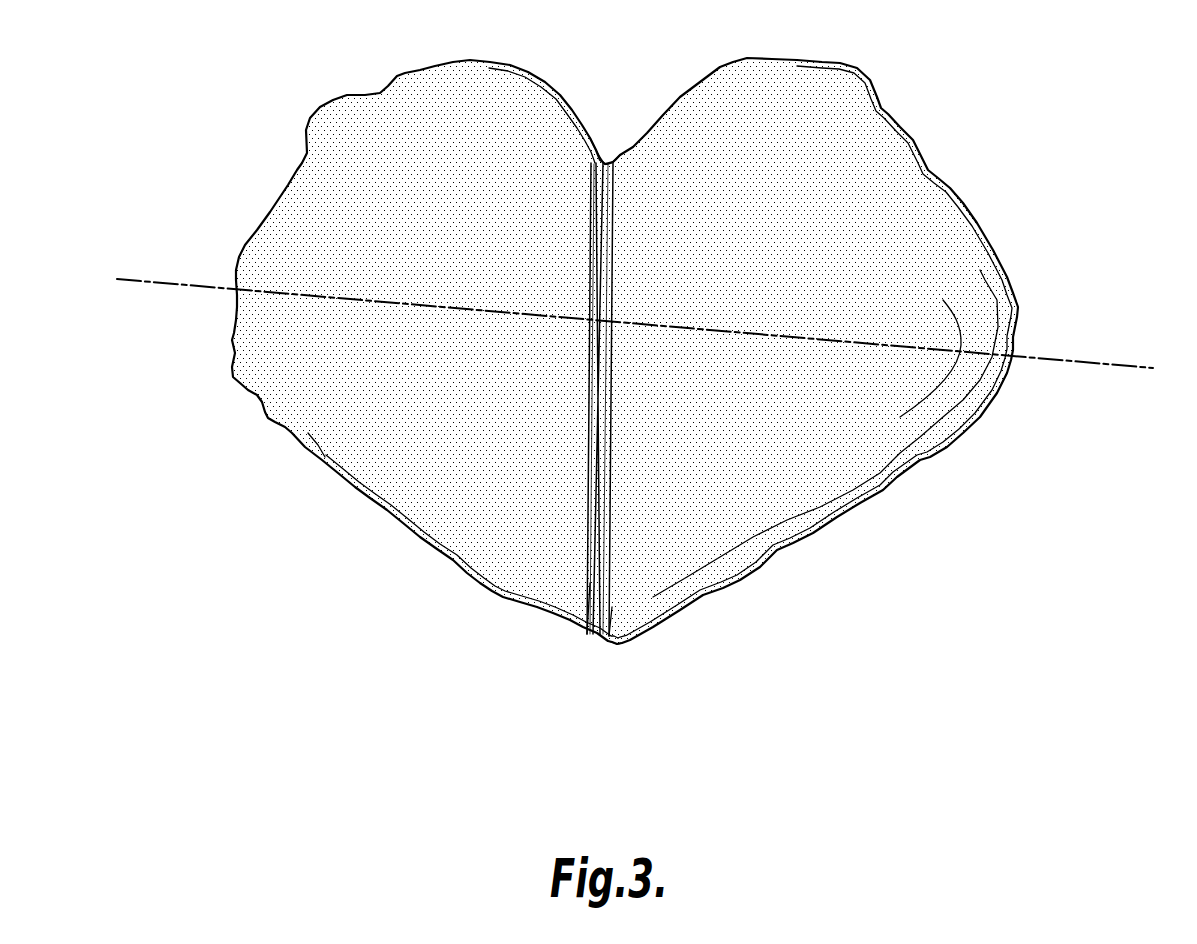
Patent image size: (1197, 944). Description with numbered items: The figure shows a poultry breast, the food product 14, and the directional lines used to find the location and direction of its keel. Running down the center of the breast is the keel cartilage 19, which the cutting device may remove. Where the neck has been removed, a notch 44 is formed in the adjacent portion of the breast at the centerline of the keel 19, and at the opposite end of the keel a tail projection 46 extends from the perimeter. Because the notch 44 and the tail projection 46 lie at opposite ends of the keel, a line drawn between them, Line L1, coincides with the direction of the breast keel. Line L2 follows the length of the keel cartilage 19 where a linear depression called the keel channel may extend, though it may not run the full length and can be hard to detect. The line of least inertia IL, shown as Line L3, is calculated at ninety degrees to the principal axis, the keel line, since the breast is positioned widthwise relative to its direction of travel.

The food product 14 is at (967, 173).
The notch 44 is at (609, 140).
The keel cartilage 19 is at (620, 637).
The tail projection 46 is at (579, 648).
The line of least inertia IL is at (652, 333).
The Line L3 is at (590, 584).
The Line L1 is at (612, 607).
The Line L2 is at (615, 643).